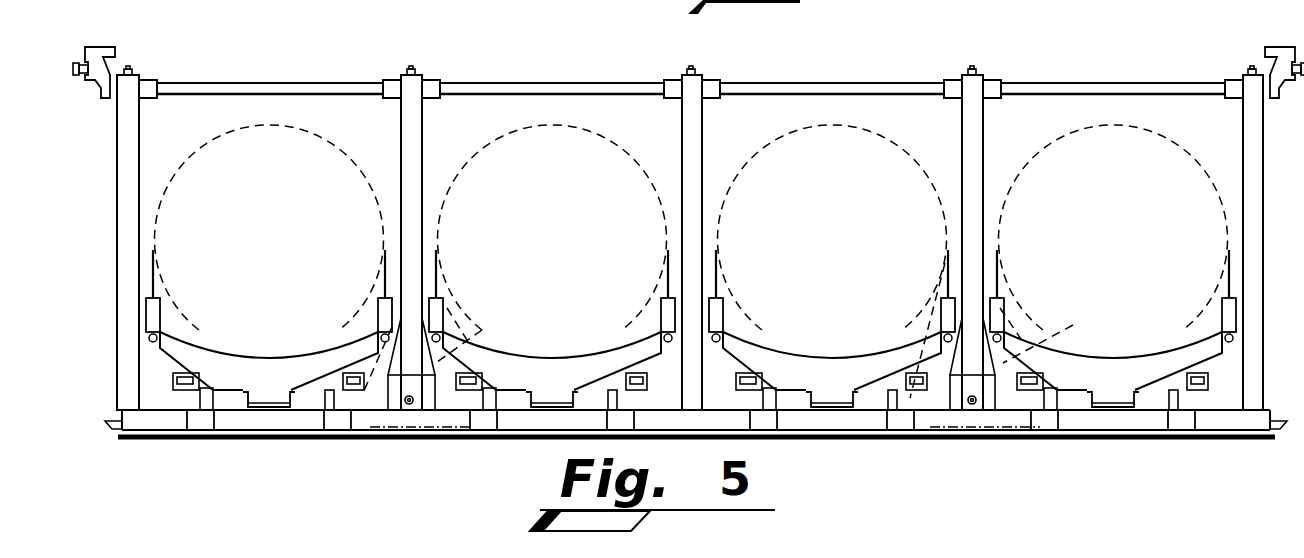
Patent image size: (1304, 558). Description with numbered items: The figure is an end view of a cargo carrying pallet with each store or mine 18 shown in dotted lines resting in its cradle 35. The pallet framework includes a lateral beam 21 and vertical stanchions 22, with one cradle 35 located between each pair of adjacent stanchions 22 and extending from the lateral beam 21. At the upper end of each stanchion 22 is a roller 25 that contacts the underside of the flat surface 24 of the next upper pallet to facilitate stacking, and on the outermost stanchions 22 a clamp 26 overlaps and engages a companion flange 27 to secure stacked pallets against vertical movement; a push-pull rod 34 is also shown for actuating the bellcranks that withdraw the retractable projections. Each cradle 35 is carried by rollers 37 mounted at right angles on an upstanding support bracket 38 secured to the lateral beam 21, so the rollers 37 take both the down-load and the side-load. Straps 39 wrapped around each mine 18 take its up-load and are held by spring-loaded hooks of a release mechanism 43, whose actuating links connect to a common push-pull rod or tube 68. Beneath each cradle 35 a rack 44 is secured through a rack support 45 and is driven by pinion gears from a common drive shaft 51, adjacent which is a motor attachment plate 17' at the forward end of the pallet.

The motor attachment plate 17' is at (732, 330).
The store or mine 18 is at (356, 165).
The lateral beam 21 is at (267, 420).
The vertical stanchion 22 is at (125, 150).
The flat surface 24 is at (928, 441).
The roller 25 is at (133, 70).
The clamp 26 is at (108, 46).
The flange 27 is at (118, 425).
The push-pull rod 34 is at (78, 64).
The cradle 35 is at (233, 362).
The roller 37 is at (176, 386).
The support bracket 38 is at (200, 422).
The strap 39 is at (160, 286).
The release mechanism 43 is at (157, 316).
The rack 44 is at (267, 409).
The rack support 45 is at (275, 402).
The drive shaft 51 is at (410, 404).
The push-pull rod or tube 68 is at (149, 339).